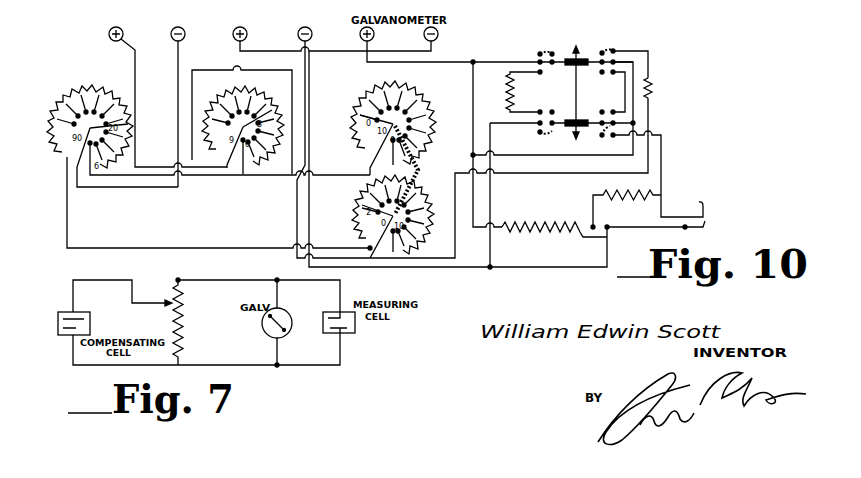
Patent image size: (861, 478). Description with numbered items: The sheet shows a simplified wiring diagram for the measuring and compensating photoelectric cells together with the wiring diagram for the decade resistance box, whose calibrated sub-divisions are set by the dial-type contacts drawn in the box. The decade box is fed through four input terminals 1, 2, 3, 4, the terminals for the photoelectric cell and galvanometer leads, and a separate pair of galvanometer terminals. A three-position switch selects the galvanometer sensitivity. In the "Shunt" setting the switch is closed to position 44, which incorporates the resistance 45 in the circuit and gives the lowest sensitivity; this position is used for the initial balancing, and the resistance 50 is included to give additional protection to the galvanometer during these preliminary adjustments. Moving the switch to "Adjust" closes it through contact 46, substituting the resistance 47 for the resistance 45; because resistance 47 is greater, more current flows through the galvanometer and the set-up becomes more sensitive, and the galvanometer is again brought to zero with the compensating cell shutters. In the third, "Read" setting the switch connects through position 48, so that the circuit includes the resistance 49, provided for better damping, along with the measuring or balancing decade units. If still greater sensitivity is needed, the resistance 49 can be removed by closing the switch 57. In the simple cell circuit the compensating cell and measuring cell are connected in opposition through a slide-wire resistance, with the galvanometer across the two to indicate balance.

The positive terminal 1 is at (168, 91).
The negative terminal 2 is at (178, 101).
The positive terminal 3 is at (420, 141).
The negative terminal 4 is at (472, 136).
The switch position 44 is at (616, 72).
The resistance 45 is at (653, 90).
The switch contact 46 is at (552, 64).
The resistance 47 is at (508, 100).
The switch position 48 is at (600, 137).
The resistance 49 is at (620, 199).
The resistance 50 is at (553, 214).
The switch 57 is at (668, 211).